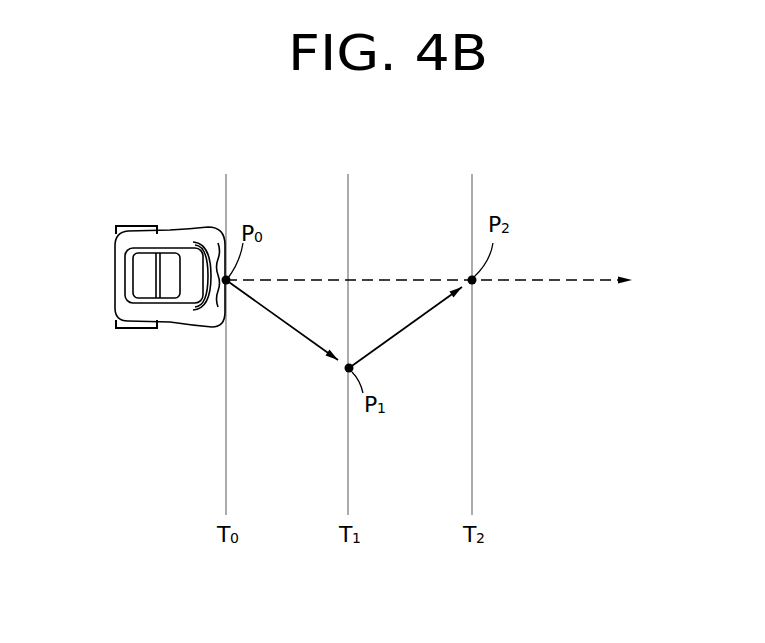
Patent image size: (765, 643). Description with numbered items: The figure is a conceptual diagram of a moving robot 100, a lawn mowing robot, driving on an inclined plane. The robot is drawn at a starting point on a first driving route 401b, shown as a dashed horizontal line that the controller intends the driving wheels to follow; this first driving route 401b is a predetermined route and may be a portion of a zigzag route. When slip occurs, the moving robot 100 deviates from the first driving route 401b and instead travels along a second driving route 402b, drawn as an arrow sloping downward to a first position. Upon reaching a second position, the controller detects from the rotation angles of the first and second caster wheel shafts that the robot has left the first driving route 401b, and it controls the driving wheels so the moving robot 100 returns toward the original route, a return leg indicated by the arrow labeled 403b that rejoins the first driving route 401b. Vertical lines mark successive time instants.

The moving robot 100 is at (167, 227).
The first driving route 401b is at (438, 265).
The second driving route 402b is at (287, 327).
The second movement segment 403b is at (407, 328).